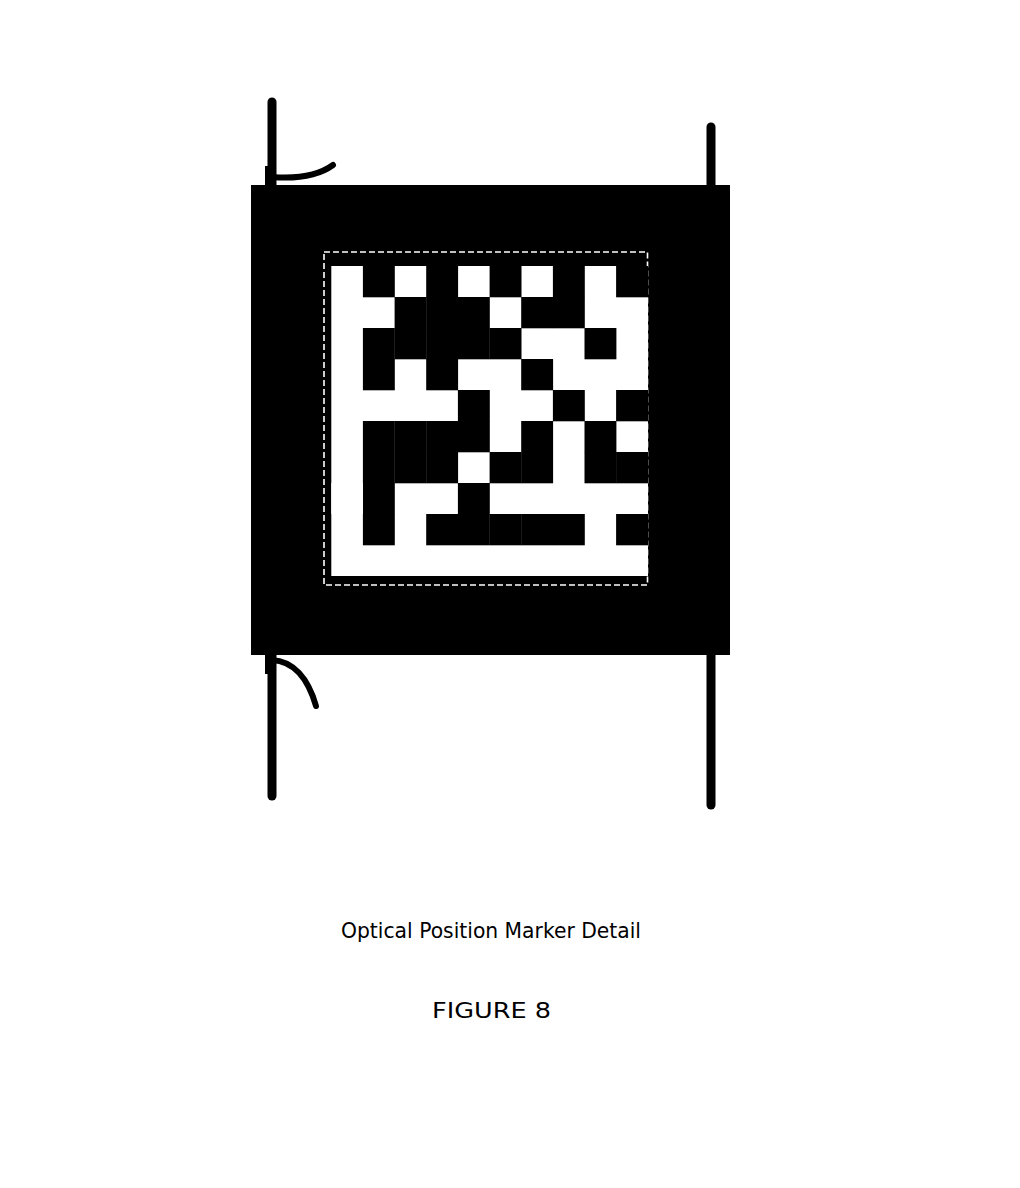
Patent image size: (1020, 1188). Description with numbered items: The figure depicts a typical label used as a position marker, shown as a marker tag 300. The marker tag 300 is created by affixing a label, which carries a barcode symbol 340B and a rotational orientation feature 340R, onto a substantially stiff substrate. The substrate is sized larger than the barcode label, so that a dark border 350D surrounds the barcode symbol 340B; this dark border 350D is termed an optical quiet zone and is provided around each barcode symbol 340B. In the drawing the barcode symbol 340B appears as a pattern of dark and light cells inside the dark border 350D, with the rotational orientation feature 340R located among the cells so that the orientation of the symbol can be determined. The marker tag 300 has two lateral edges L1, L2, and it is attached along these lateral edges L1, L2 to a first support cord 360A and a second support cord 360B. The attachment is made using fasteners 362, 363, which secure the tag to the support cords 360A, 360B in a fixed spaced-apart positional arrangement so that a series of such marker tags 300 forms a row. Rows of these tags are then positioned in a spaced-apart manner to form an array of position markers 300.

The marker tag 300 is at (474, 160).
The dark border 350D is at (697, 267).
The barcode symbol 340B is at (344, 329).
The rotational orientation feature 340R is at (329, 498).
The lateral edge L1 is at (243, 417).
The lateral edge L2 is at (722, 467).
The first support cord 360A is at (254, 733).
The second support cord 360B is at (700, 717).
The fastener 362 is at (255, 651).
The fastener 363 is at (254, 162).